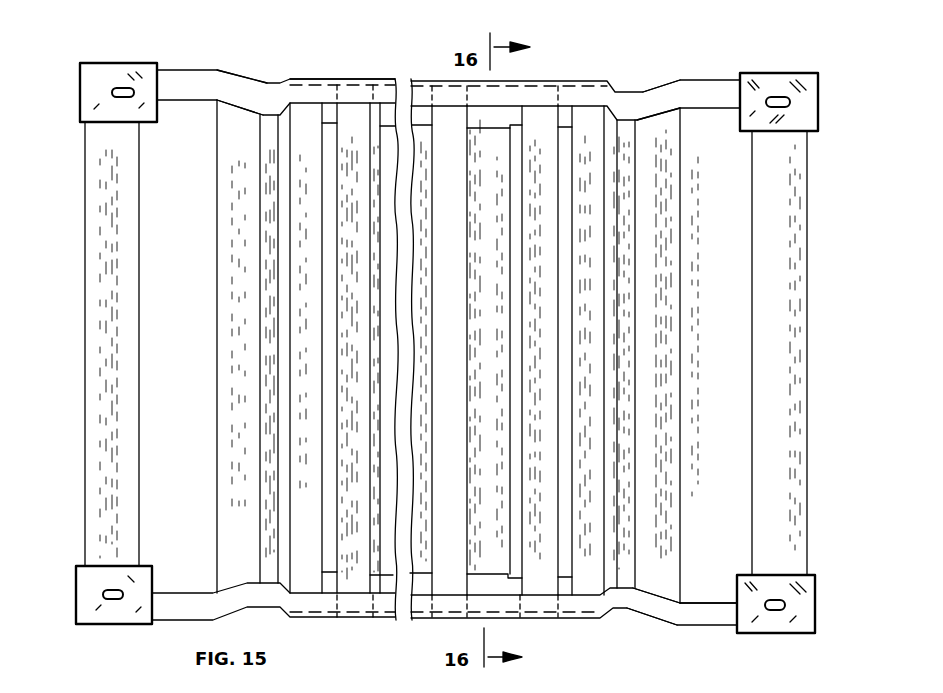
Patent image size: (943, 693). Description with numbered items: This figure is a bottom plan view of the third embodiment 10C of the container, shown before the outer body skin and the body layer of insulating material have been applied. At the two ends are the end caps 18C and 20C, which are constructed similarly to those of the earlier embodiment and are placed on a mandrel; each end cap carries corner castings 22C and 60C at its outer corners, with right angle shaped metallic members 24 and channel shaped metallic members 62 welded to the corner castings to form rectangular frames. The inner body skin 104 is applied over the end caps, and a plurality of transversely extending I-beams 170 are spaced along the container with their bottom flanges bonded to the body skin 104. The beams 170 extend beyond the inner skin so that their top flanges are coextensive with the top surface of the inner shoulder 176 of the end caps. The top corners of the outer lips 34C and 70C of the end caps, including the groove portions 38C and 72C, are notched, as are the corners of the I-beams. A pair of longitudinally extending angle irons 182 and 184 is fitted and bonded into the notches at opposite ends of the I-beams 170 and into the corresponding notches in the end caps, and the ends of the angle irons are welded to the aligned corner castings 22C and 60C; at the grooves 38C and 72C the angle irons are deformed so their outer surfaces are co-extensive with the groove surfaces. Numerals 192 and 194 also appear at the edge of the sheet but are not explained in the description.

The third embodiment 10C is at (712, 655).
The end cap 18C is at (98, 637).
The end cap 20C is at (805, 645).
The corner casting 22C is at (97, 67).
The right angle shaped metallic member 24 is at (92, 294).
The outer lip 34C is at (188, 64).
The groove portion 38C is at (270, 85).
The corner casting 60C is at (810, 76).
The channel shaped metallic member 62 is at (805, 286).
The outer lip 70C is at (685, 64).
The groove portion 72C is at (625, 610).
The inner body skin 104 is at (477, 567).
The I-beam 170 is at (437, 120).
The inner shoulder 176 is at (312, 80).
The angle iron 182 is at (507, 92).
The angle iron 184 is at (507, 608).
The bracket element 192 is at (88, 692).
The bracket element 194 is at (17, 688).